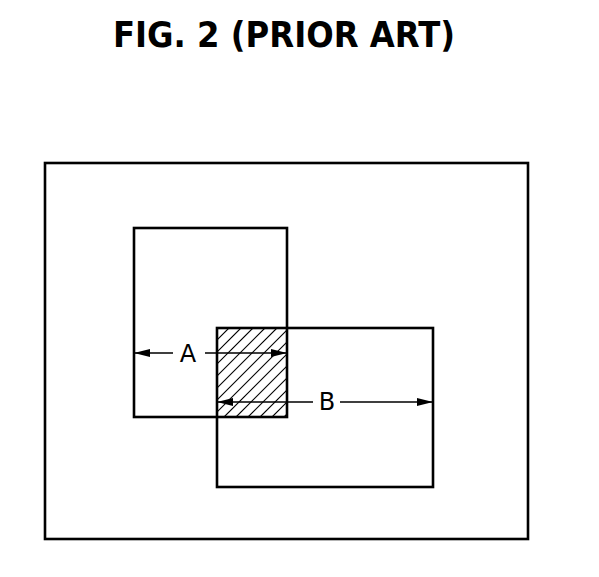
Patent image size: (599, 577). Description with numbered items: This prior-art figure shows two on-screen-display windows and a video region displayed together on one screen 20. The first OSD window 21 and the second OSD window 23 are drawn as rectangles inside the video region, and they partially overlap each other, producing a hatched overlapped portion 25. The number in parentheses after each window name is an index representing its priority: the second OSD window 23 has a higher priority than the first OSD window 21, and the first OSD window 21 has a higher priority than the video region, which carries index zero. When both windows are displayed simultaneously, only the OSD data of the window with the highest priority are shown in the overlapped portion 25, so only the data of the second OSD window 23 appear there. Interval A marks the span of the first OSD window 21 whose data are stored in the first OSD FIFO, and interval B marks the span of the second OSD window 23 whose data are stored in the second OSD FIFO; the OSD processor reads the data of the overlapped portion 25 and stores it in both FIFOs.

The screen 20 is at (300, 163).
The first OSD window 21 is at (208, 226).
The second OSD window 23 is at (367, 327).
The overlapped portion 25 is at (260, 332).